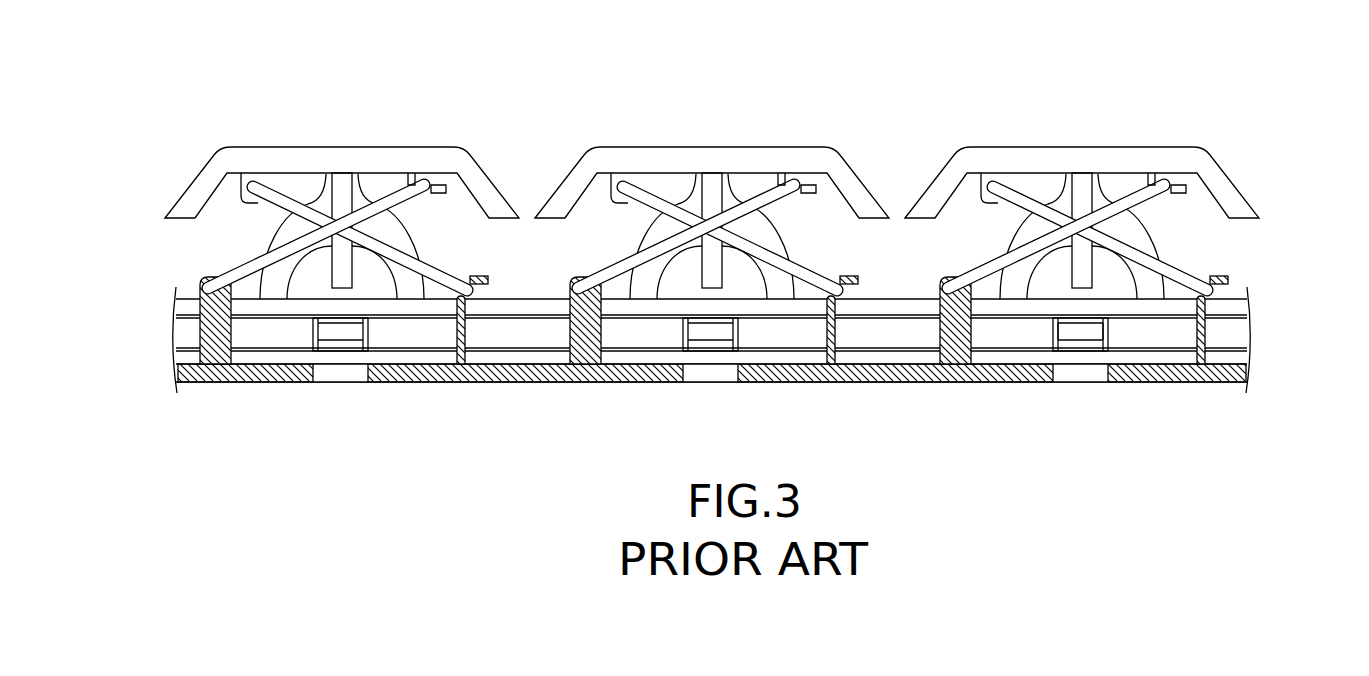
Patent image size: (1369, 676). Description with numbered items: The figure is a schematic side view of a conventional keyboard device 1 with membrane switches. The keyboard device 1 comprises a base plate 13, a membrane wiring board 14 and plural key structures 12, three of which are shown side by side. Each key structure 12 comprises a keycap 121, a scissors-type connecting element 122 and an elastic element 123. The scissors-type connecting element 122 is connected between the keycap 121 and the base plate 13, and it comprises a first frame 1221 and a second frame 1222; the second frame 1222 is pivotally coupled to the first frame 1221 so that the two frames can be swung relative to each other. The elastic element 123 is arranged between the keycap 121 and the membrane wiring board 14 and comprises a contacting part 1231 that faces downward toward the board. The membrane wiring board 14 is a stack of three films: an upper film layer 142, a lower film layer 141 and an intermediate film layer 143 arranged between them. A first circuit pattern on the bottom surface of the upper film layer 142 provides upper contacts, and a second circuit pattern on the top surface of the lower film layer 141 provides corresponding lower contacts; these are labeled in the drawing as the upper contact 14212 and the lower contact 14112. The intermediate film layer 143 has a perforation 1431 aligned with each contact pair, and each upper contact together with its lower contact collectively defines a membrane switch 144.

The keyboard device 1 is at (1113, 78).
The key structure 12 is at (401, 166).
The keycap 121 is at (312, 124).
The scissors-type connecting element 122 is at (401, 162).
The first frame 1221 is at (438, 277).
The second frame 1222 is at (243, 277).
The elastic element 123 is at (399, 204).
The contacting part 1231 is at (343, 268).
The base plate 13 is at (216, 364).
The membrane wiring board 14 is at (769, 358).
The lower film layer 141 is at (1240, 354).
The upper film layer 142 is at (1220, 302).
The intermediate film layer 143 is at (1229, 329).
The perforation 1431 is at (1082, 332).
The membrane switch 144 is at (1042, 397).
The lower contact 14112 is at (1084, 350).
The upper contact 14212 is at (1080, 321).